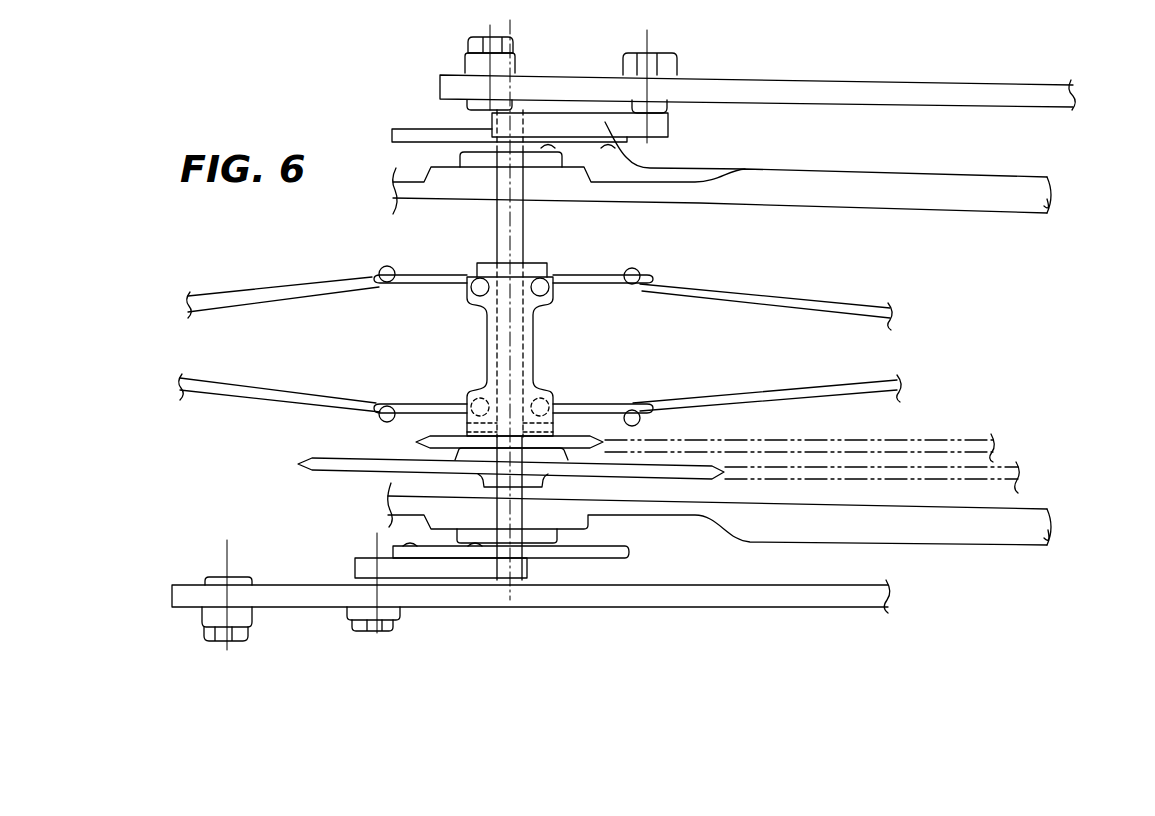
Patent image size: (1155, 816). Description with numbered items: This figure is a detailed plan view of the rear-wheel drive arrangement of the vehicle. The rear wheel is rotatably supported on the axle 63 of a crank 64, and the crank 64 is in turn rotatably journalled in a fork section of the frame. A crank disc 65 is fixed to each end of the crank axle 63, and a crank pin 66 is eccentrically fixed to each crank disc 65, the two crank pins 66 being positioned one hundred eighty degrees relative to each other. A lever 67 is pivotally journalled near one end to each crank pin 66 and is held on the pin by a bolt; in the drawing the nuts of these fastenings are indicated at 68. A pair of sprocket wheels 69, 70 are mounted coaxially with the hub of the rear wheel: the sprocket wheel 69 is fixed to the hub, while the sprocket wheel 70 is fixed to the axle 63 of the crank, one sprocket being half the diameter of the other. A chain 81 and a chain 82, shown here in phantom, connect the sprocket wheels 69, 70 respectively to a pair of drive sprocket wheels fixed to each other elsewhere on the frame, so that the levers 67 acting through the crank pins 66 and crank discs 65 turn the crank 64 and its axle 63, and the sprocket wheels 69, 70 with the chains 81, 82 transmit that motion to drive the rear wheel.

The axle 63 is at (525, 246).
The crank 64 is at (620, 155).
The crank disc 65 is at (401, 129).
The crank pin 66 is at (652, 53).
The lever 67 is at (706, 608).
The nut 68 is at (668, 70).
The sprocket wheel 69 is at (443, 436).
The sprocket wheel 70 is at (348, 474).
The chain 81 is at (943, 446).
The chain 82 is at (1005, 479).